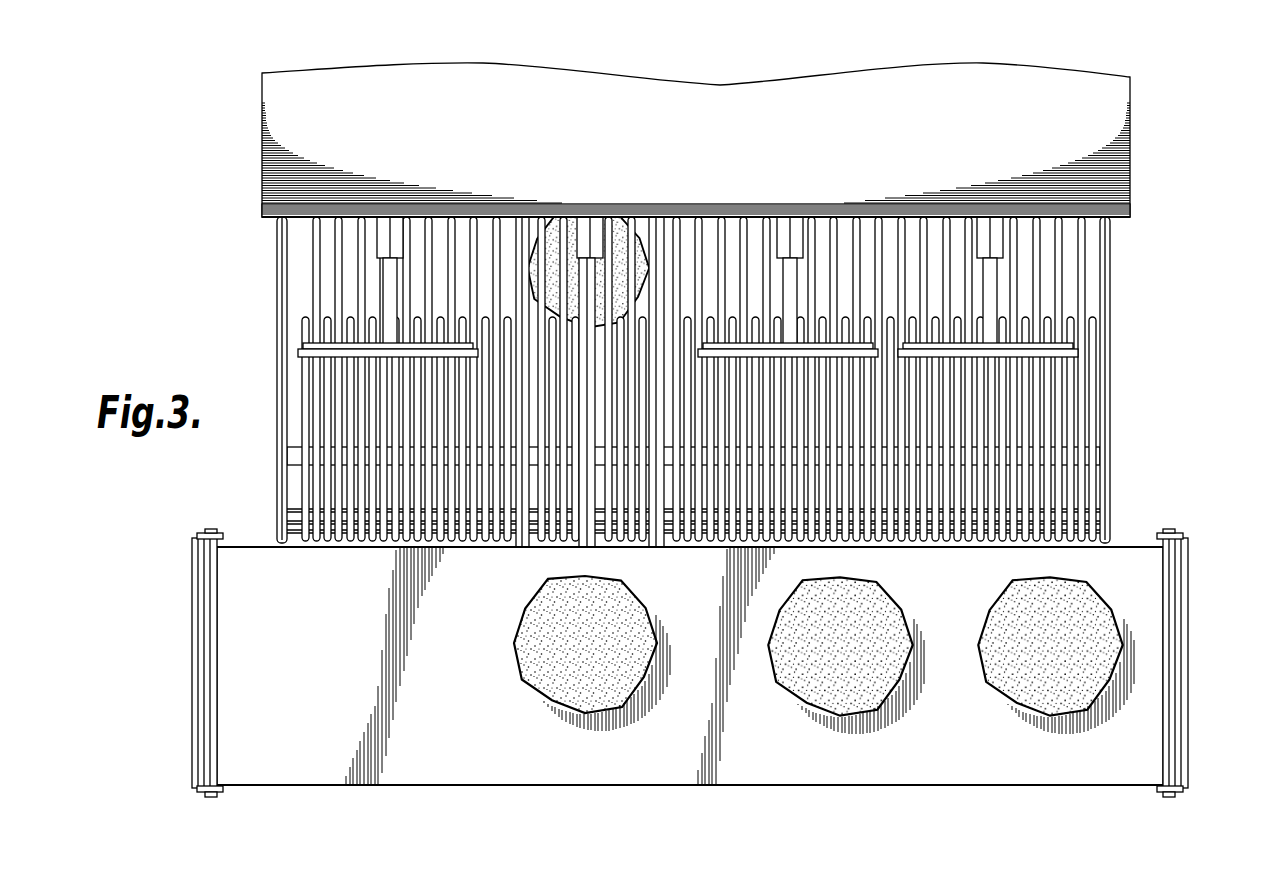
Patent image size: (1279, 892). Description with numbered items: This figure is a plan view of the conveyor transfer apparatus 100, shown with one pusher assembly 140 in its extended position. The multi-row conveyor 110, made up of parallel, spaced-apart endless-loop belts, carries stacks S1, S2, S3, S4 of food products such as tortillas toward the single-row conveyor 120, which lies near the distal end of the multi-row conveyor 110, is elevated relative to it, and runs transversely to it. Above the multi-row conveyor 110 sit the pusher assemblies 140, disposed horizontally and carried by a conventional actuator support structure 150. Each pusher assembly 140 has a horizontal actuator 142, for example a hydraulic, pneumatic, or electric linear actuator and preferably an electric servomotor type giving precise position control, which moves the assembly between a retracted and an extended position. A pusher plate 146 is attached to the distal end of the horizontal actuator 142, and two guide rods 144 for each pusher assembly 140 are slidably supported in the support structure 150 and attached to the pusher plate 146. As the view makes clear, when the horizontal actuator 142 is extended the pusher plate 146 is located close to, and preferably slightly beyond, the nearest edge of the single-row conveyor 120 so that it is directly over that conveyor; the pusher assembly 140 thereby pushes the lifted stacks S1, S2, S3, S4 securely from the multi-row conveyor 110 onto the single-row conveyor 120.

The conveyor transfer apparatus 100 is at (1180, 147).
The multi-row conveyor 110 is at (1113, 458).
The single-row conveyor 120 is at (270, 677).
The pusher assembly 140 is at (736, 246).
The horizontal actuator 142 is at (580, 230).
The guide rod 144 is at (1066, 327).
The pusher plate 146 is at (1066, 362).
The actuator support structure 150 is at (959, 146).
The stack S1 is at (633, 285).
The stack S2 is at (598, 646).
The stack S3 is at (850, 653).
The stack S4 is at (1063, 653).